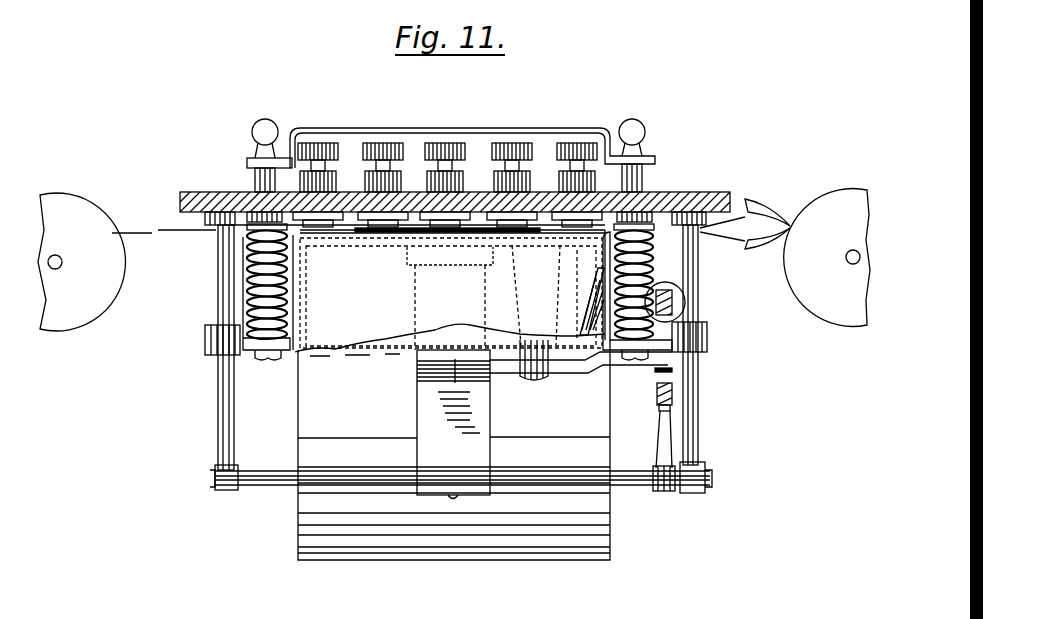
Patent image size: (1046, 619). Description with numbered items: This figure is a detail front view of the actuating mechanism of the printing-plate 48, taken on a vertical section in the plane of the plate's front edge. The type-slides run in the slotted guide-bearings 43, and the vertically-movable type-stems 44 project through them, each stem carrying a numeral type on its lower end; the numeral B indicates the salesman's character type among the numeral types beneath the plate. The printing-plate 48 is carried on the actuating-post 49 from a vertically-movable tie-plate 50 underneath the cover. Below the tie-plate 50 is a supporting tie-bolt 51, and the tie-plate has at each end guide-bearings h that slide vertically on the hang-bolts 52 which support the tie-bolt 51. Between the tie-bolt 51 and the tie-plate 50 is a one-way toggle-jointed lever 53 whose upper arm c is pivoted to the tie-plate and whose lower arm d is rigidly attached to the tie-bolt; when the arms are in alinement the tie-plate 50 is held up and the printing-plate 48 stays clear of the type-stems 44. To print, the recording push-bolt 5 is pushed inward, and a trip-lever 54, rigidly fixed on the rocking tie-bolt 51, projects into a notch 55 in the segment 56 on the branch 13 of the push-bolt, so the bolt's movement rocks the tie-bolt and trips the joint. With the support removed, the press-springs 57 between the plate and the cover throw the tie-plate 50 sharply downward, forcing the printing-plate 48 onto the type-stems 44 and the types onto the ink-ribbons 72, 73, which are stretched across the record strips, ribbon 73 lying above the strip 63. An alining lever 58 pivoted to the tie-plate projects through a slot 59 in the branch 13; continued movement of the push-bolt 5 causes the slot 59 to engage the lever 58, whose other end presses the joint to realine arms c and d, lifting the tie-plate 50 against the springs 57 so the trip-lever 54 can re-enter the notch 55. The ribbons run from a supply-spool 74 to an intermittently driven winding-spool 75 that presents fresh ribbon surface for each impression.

The slotted guide-bearings 43 is at (618, 192).
The printing-plate 48 is at (410, 130).
The actuating-post 49 is at (254, 182).
The type-stems 44 is at (333, 164).
The hang-bolts 52 is at (706, 403).
The guide-bearings h is at (207, 343).
The press-springs 57 is at (452, 281).
The tie-plate 50 is at (280, 354).
The recording push-bolt 5 is at (660, 290).
The type body B is at (449, 293).
The segment 56 is at (361, 236).
The strip 63 is at (353, 288).
The upper arm c is at (453, 416).
The toggle-jointed lever 53 is at (417, 369).
The lower arm d is at (454, 412).
The tie-bolt 51 is at (285, 484).
The alining or joint-closing lever 58 is at (575, 373).
The slot 59 is at (668, 363).
The branch 13 is at (657, 391).
The notch 55 is at (659, 421).
The trip-lever 54 is at (657, 449).
The ink-ribbon 72 is at (160, 230).
The ink-ribbon 73 is at (170, 231).
The supply-spool 74 is at (81, 262).
The winding-spool 75 is at (827, 258).